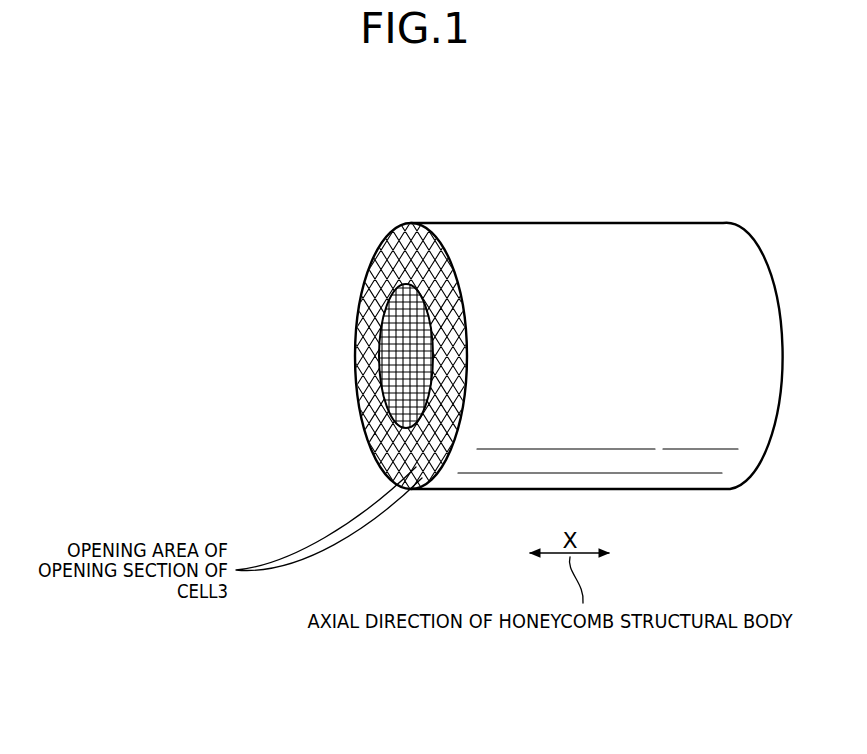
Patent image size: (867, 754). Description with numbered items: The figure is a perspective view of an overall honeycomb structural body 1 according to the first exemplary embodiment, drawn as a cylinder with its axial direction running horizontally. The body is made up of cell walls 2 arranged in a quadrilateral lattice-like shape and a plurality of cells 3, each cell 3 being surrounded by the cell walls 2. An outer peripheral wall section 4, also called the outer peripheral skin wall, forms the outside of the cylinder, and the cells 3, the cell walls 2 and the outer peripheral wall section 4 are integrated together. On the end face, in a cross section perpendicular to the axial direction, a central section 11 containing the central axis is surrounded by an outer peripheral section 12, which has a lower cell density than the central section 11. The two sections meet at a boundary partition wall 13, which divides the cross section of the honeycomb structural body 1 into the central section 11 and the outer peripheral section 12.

The honeycomb structural body 1 is at (644, 178).
The cell walls 2 is at (364, 333).
The cells 3 is at (371, 359).
The outer peripheral wall section 4 is at (692, 458).
The central section 11 is at (385, 295).
The outer peripheral section 12 is at (404, 458).
The boundary partition wall 13 is at (401, 300).